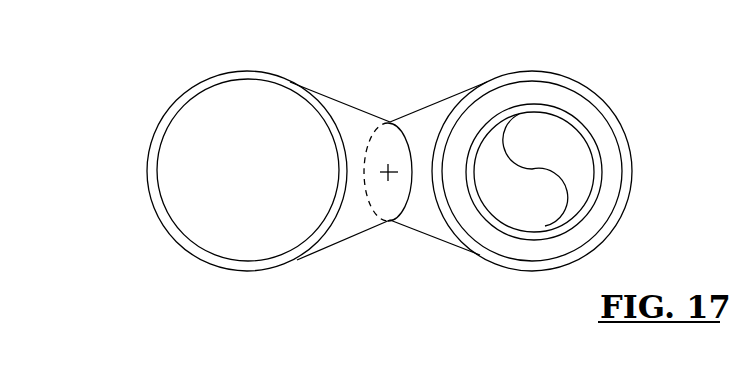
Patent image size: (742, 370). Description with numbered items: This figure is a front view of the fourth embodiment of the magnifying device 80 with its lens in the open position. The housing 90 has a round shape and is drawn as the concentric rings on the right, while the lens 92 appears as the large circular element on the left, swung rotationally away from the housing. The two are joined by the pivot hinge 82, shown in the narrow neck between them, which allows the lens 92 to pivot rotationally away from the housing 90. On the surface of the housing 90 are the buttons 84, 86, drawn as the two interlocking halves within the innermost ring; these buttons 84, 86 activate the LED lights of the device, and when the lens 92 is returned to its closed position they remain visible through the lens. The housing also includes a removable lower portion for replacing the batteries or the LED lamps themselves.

The magnifying device 80 is at (190, 41).
The pivot hinge 82 is at (385, 142).
The button 84 is at (557, 143).
The button 86 is at (503, 194).
The housing 90 is at (622, 127).
The lens 92 is at (200, 147).